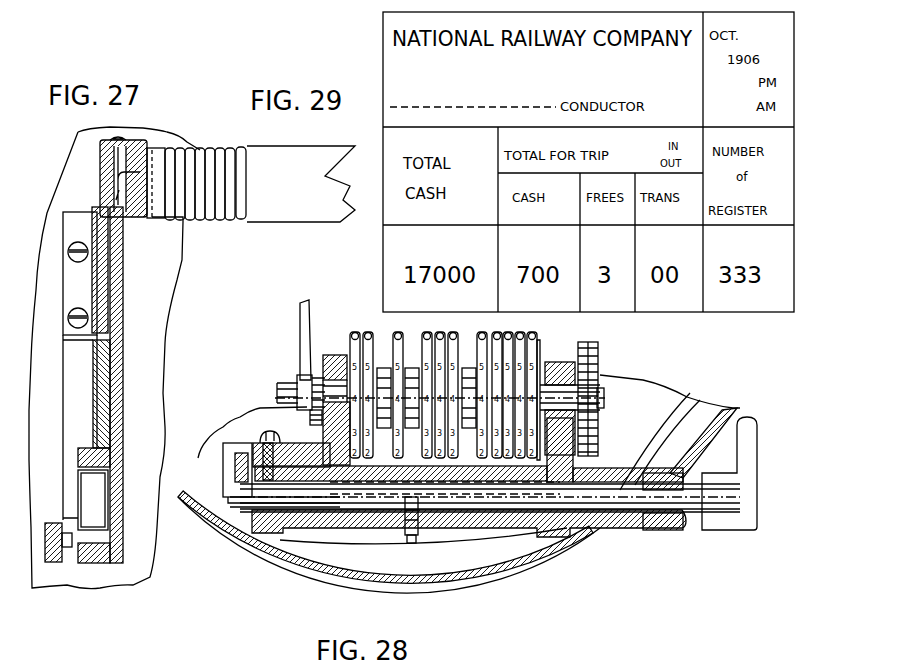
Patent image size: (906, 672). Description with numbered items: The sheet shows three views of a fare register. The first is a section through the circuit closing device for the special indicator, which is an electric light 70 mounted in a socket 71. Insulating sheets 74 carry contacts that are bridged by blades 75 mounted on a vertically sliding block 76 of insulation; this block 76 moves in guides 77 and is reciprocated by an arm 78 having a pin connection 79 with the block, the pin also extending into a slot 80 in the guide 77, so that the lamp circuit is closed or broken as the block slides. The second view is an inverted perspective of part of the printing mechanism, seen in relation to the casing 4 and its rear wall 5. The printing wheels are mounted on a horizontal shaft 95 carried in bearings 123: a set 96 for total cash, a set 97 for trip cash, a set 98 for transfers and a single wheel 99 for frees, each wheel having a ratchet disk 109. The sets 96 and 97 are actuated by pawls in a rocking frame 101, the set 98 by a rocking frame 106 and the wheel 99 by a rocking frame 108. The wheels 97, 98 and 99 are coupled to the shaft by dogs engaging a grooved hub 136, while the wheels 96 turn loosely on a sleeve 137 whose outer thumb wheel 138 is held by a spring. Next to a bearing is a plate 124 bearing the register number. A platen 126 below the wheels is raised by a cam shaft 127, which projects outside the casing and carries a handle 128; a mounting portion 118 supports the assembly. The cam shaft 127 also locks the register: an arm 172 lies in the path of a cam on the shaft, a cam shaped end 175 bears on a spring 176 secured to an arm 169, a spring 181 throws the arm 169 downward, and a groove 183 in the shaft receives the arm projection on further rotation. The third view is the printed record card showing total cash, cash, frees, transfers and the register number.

In FIG. 28, the casing 4 is at (527, 562).
In FIG. 27, the rear wall of the casing 5 is at (163, 346).
In FIG. 27, the electric light 70 is at (301, 184).
In FIG. 27, the socket 71 is at (218, 148).
In FIG. 27, the insulating sheets 74 is at (100, 183).
In FIG. 27, the blades 75 is at (122, 268).
In FIG. 27, the vertically sliding block 76 is at (122, 389).
In FIG. 27, the guides 77 is at (100, 400).
In FIG. 27, the arm 78 is at (52, 523).
In FIG. 27, the pin connection 79 is at (82, 548).
In FIG. 27, the slot 80 is at (93, 500).
In FIG. 28, the horizontal shaft 95 is at (300, 378).
In FIG. 28, the printing wheels for total cash 96 is at (517, 384).
In FIG. 28, the printing wheels for trip cash 97 is at (440, 384).
In FIG. 28, the printing wheels for transfers 98 is at (359, 382).
In FIG. 28, the frees printing wheel 99 is at (394, 384).
In FIG. 28, the rocking frame 101 is at (578, 428).
In FIG. 28, the rocking frame 106 is at (300, 395).
In FIG. 28, the rocking frame 108 is at (392, 428).
In FIG. 28, the ratchet disk 109 is at (533, 345).
In FIG. 28, the lever 118 is at (300, 333).
In FIG. 28, the bearings 123 is at (335, 372).
In FIG. 28, the plate 124 is at (322, 420).
In FIG. 28, the platen 126 is at (435, 487).
In FIG. 28, the cam shaft 127 is at (620, 503).
In FIG. 28, the handle 128 is at (765, 453).
In FIG. 28, the hub 136 is at (481, 385).
In FIG. 28, the sleeve 137 is at (560, 387).
In FIG. 28, the thumb wheel 138 is at (598, 362).
In FIG. 28, the arm 169 is at (235, 458).
In FIG. 28, the arm 172 is at (412, 543).
In FIG. 28, the cam shaped projecting end 175 is at (248, 500).
In FIG. 28, the spring 176 is at (228, 482).
In FIG. 28, the spring 181 is at (262, 443).
In FIG. 28, the groove 183 is at (430, 510).